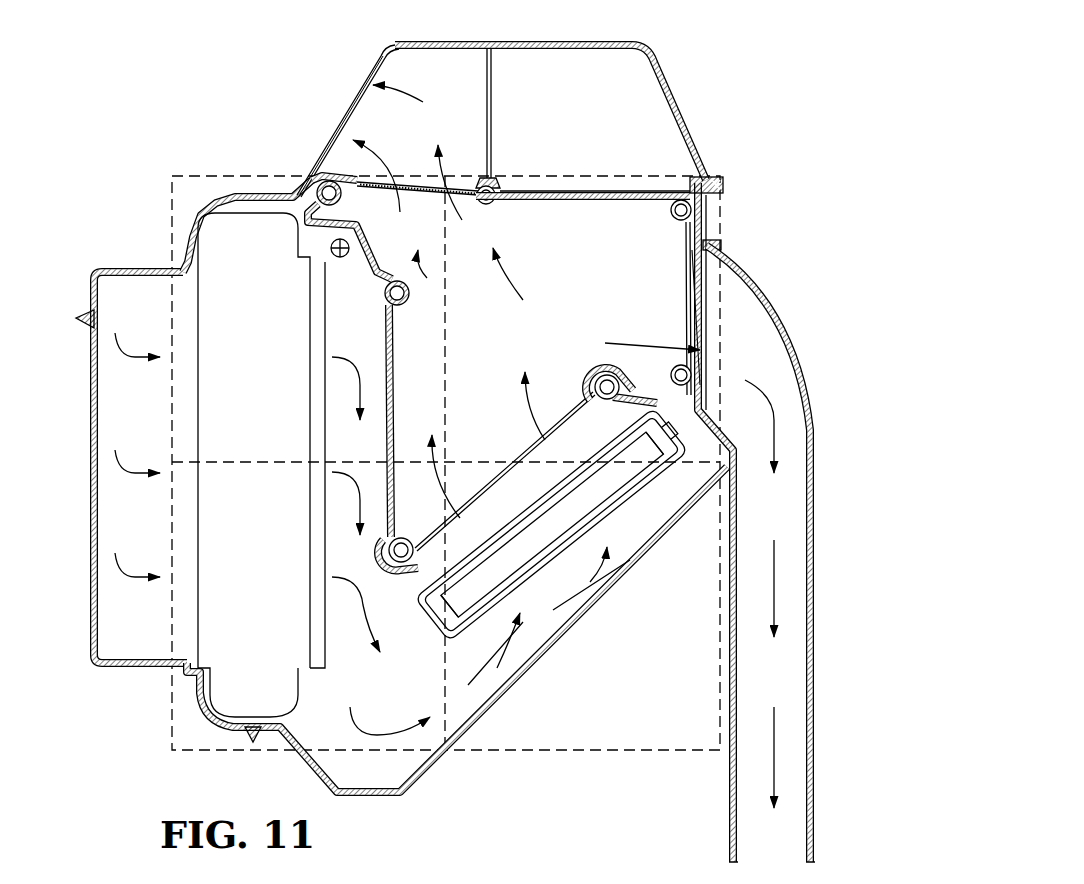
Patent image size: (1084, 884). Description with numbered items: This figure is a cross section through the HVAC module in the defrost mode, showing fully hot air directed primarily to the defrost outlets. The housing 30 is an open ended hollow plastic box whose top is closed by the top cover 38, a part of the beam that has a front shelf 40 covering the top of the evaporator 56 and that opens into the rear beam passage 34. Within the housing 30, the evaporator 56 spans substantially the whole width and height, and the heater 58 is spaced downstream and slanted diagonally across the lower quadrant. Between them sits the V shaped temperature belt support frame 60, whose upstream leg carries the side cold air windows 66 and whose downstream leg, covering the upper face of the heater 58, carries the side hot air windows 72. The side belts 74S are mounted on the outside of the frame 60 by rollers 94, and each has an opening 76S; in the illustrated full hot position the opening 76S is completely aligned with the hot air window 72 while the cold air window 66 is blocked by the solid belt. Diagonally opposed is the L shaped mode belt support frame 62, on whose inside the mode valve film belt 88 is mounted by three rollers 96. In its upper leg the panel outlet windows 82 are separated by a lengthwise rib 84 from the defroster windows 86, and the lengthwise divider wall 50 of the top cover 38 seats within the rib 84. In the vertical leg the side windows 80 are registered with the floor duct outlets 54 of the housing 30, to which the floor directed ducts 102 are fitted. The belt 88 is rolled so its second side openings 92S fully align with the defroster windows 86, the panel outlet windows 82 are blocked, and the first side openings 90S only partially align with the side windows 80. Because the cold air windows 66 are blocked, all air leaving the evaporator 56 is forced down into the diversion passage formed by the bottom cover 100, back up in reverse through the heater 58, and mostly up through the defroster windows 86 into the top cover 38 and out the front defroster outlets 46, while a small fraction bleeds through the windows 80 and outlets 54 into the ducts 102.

The housing 30 is at (92, 458).
The rear beam passage 34 is at (367, 95).
The top cover 38 is at (655, 68).
The front shelf 40 is at (136, 265).
The front defroster outlets 46 is at (373, 60).
The lengthwise divider wall 50 is at (490, 74).
The floor duct outlets 54 is at (713, 250).
The evaporator 56 is at (268, 406).
The heater 58 is at (630, 492).
The temperature belt support frame 60 is at (583, 382).
The mode belt support frame 62 is at (681, 178).
The side cold air windows 66 is at (393, 335).
The side hot air windows 72 is at (425, 535).
The side belts 74S is at (378, 312).
The side belt opening 76S is at (462, 520).
The side windows 80 is at (692, 263).
The panel outlet windows 82 is at (674, 194).
The lengthwise rib 84 is at (490, 178).
The defroster windows 86 is at (338, 172).
The mode valve film belt 88 is at (588, 190).
The first side openings 90S is at (690, 342).
The second side openings 92S is at (407, 188).
The rollers 94 is at (396, 0).
The rollers 96 is at (340, 198).
The bottom cover 100 is at (540, 657).
The floor directed ducts 102 is at (797, 345).